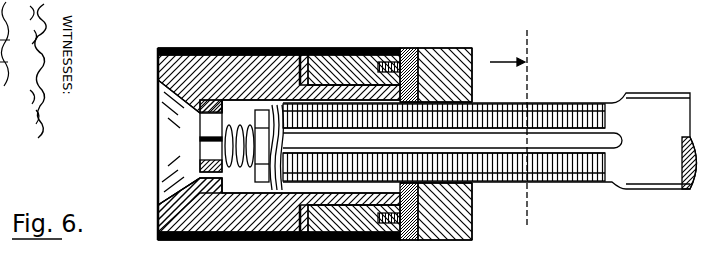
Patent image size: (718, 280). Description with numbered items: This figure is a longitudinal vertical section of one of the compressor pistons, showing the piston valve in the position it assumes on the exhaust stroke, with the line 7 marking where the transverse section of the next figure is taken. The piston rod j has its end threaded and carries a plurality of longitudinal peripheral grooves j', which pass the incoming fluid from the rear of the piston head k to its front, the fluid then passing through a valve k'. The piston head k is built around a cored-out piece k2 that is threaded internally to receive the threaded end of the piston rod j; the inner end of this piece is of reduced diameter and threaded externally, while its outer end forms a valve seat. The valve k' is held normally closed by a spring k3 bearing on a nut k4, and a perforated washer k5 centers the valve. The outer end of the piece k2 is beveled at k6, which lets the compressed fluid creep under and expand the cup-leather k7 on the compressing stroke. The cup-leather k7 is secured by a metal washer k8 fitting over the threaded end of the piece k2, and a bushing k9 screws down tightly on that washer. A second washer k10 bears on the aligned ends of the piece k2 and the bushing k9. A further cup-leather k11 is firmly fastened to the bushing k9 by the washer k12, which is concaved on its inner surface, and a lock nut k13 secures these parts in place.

The piston head k is at (315, 125).
The valve k' is at (159, 142).
The cored-out piece k2 is at (207, 67).
The spring k3 is at (241, 140).
The nut k4 is at (262, 178).
The perforated washer k5 is at (182, 243).
The beveled edge k6 is at (128, 247).
The cup-leather k7 is at (288, 200).
The metal washer k8 is at (307, 238).
The bushing k9 is at (362, 222).
The second washer k10 is at (473, 207).
The cup-leather k11 is at (395, 238).
The washer k12 is at (410, 238).
The lock nut k13 is at (478, 233).
The piston rod j is at (490, 141).
The longitudinal peripheral grooves j' is at (444, 115).
The section line 7- 7 is at (514, 121).